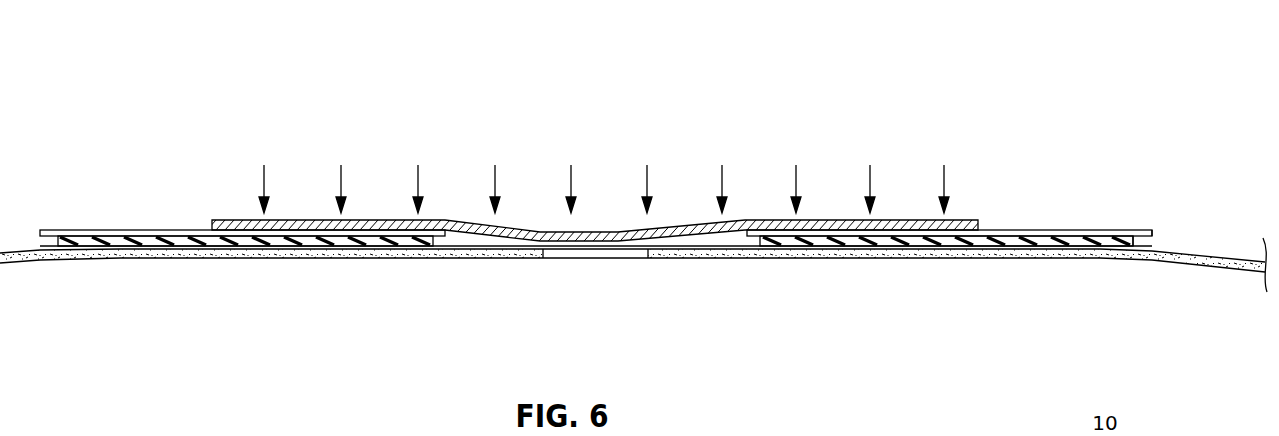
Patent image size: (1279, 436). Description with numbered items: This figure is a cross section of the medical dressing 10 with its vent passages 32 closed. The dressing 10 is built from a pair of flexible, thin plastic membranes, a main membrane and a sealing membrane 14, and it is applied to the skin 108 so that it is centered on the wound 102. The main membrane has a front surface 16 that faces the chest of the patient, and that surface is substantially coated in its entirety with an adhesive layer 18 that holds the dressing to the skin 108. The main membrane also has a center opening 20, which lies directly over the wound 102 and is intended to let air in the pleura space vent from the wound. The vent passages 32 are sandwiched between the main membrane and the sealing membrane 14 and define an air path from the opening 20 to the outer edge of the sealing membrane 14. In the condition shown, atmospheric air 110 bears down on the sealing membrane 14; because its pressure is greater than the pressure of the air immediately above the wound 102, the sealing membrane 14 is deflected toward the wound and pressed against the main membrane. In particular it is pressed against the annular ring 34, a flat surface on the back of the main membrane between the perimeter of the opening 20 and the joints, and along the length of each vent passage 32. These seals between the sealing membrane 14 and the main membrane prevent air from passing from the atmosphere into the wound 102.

The medical dressing 10 is at (1083, 114).
The sealing membrane 14 is at (883, 237).
The front surface 16 is at (995, 232).
The adhesive layer 18 is at (1140, 242).
The center opening 20 is at (465, 238).
The vent passages 32 is at (362, 221).
The annular ring 34 is at (413, 247).
The wound 102 is at (633, 249).
The skin 108 is at (1205, 263).
The atmospheric air 110 is at (756, 161).